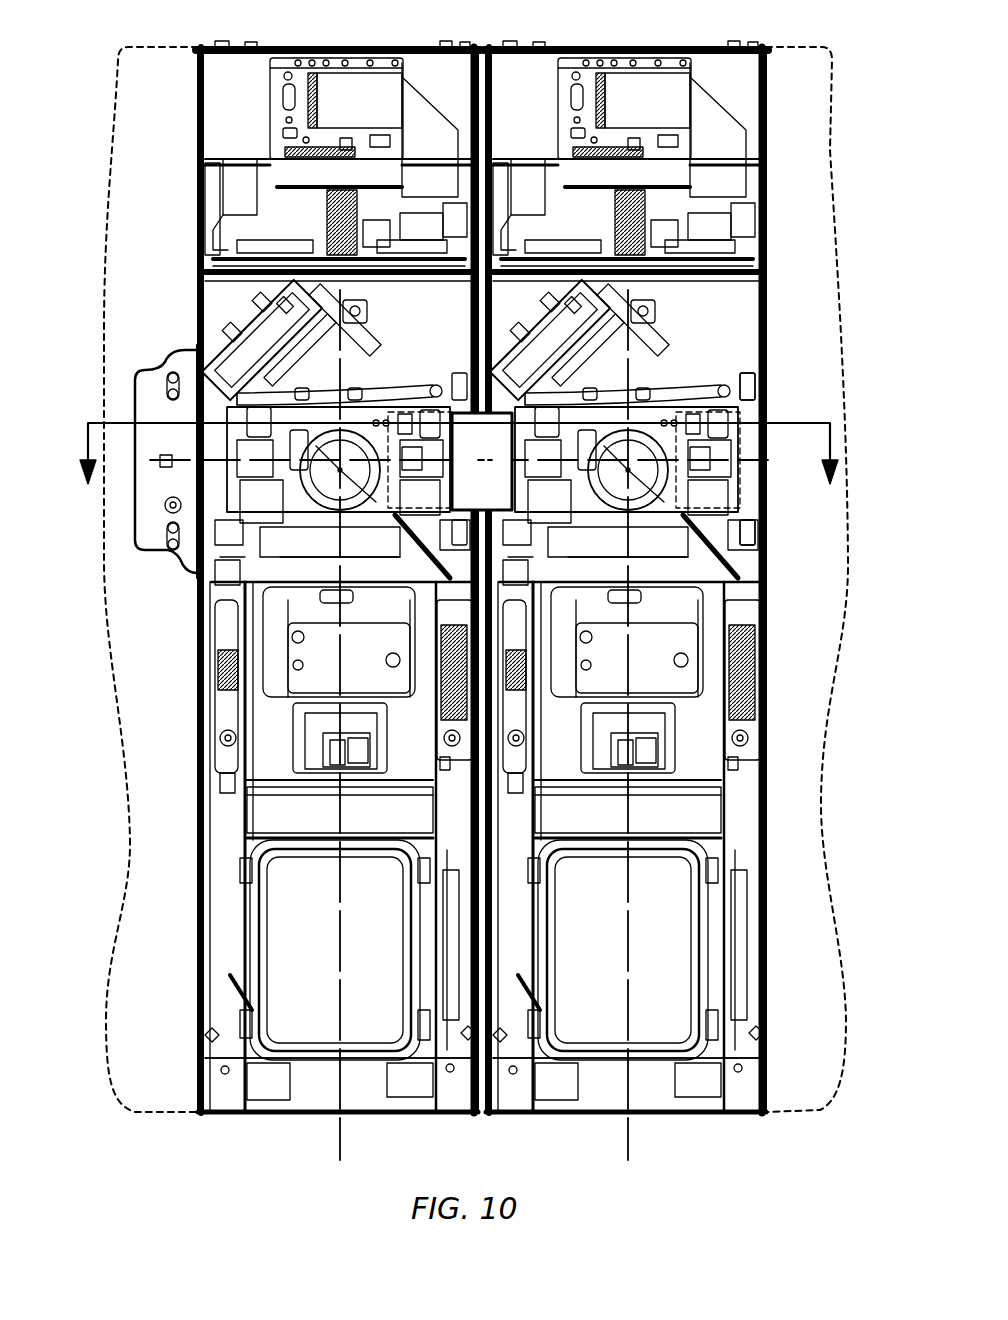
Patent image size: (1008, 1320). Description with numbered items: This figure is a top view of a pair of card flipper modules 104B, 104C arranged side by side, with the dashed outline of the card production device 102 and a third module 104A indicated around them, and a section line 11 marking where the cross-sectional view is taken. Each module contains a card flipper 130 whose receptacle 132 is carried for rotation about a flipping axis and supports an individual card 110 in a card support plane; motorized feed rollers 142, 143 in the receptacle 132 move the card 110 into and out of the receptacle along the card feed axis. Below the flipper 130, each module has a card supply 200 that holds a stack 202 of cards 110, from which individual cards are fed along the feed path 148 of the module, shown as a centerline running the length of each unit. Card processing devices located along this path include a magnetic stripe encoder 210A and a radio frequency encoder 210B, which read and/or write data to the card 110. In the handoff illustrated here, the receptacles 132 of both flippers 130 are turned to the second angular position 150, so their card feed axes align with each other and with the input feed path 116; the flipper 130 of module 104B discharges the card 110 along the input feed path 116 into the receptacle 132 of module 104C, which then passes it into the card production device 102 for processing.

The card production device 102 is at (128, 52).
The card flipper module 104A is at (814, 50).
The card flipper module 104B is at (660, 47).
The card flipper module 104C is at (313, 47).
The card flipper 130 is at (400, 352).
The receptacle 132 is at (373, 393).
The card 110 is at (462, 497).
The feed roller 143 is at (250, 478).
The feed roller 142 is at (433, 455).
The radio frequency encoder 210B is at (300, 638).
The magnetic stripe encoder 210A is at (300, 738).
The stack of cards 202 is at (287, 935).
The feed path 148 is at (343, 958).
The card supply 200 is at (298, 1102).
The second angular position 150 is at (183, 360).
The input feed path 116 is at (163, 462).
The line 11- 11 is at (447, 454).